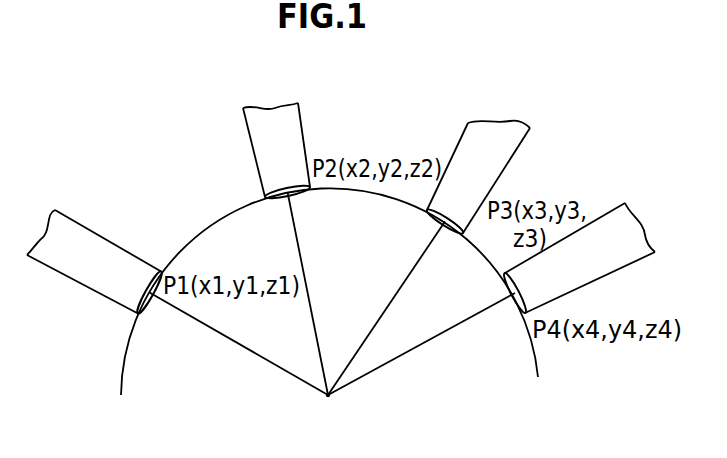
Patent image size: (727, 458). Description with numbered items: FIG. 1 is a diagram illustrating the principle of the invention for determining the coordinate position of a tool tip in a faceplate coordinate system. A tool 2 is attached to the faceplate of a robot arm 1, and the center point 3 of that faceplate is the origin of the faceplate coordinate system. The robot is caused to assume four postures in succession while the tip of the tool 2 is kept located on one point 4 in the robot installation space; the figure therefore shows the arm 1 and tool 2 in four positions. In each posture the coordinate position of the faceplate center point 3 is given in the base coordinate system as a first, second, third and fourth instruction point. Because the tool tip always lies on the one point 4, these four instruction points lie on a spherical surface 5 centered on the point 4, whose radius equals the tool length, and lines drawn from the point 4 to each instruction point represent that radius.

The arm 1 is at (103, 250).
The tool 2 is at (233, 347).
The center point of the faceplate 3 is at (145, 307).
The one point 4 is at (332, 410).
The spherical surface / arc 5 is at (210, 228).